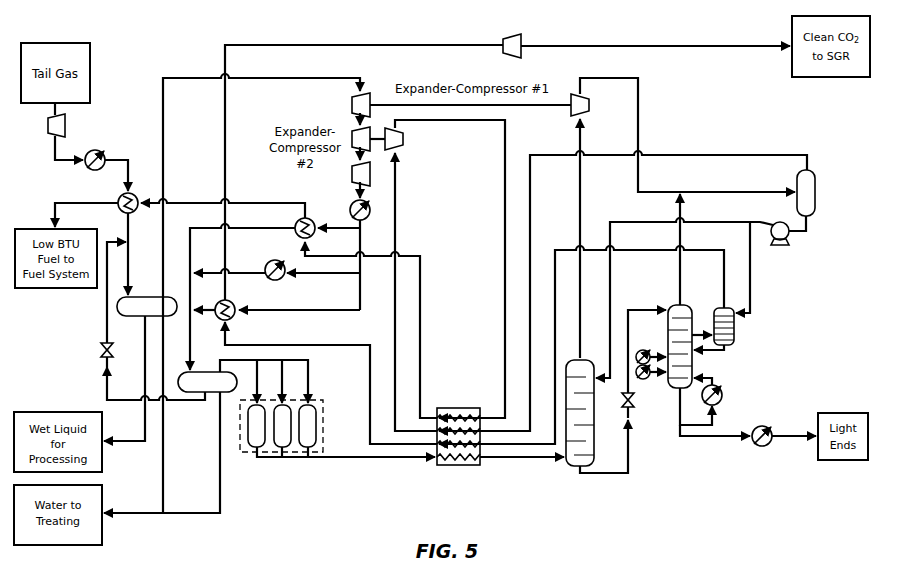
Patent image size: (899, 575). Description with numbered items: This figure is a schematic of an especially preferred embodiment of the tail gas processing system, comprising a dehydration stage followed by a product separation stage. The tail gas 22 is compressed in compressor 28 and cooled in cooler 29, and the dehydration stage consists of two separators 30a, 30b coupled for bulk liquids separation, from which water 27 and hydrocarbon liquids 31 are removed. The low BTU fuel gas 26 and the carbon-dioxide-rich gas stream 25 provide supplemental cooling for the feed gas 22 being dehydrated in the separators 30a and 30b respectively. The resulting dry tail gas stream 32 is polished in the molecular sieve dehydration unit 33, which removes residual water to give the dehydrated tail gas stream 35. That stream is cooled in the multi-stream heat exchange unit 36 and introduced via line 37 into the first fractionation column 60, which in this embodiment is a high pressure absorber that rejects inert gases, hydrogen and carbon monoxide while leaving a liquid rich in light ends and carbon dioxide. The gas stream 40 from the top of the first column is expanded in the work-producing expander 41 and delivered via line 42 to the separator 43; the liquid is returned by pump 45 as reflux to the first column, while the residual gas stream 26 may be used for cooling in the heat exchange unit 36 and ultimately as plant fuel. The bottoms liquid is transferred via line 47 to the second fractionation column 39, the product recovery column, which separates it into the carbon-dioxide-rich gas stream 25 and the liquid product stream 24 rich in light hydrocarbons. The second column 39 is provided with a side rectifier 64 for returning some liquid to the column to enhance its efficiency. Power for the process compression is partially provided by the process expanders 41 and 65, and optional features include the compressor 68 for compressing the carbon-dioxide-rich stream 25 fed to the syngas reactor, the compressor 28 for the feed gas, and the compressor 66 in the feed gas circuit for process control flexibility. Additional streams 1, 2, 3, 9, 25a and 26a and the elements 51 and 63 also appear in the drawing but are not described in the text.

The compressed tail gas stream 1 is at (56, 146).
The cooled tail gas stream 2 is at (186, 78).
The separator feed stream 3 is at (192, 336).
The recycle liquid stream 9 is at (128, 256).
The tail gas 22 is at (55, 110).
The liquid product stream 24 is at (801, 443).
The CO2-rich gas stream 25 is at (723, 46).
The recycle stream 25a is at (568, 248).
The residual gas stream 26 is at (77, 201).
The overhead vapor stream 26a is at (537, 220).
The water 27 is at (125, 441).
The compressor 28 is at (47, 125).
The cooler 29 is at (100, 152).
The first separator 30a is at (142, 296).
The second separator 30b is at (216, 392).
The hydrocarbon liquids 31 is at (125, 513).
The tail gas stream 32 is at (236, 359).
The dehydrator 33 is at (323, 427).
The tail gas stream 35 is at (366, 456).
The heat exchange unit 36 is at (452, 464).
The line 37 is at (524, 458).
The second fractionation column 39 is at (692, 358).
The gas stream 40 is at (584, 325).
The expander 41 is at (589, 108).
The line 42 is at (603, 78).
The separator 43 is at (815, 193).
The pump 45 is at (779, 245).
The line 47 is at (644, 308).
The side reboilers 51 is at (660, 397).
The first fractionation column 60 is at (596, 437).
The second distillation column 63 is at (681, 292).
The side rectifier 64 is at (736, 336).
The process expander 65 is at (403, 147).
The compressor 66 is at (352, 178).
The compressor 68 is at (514, 34).